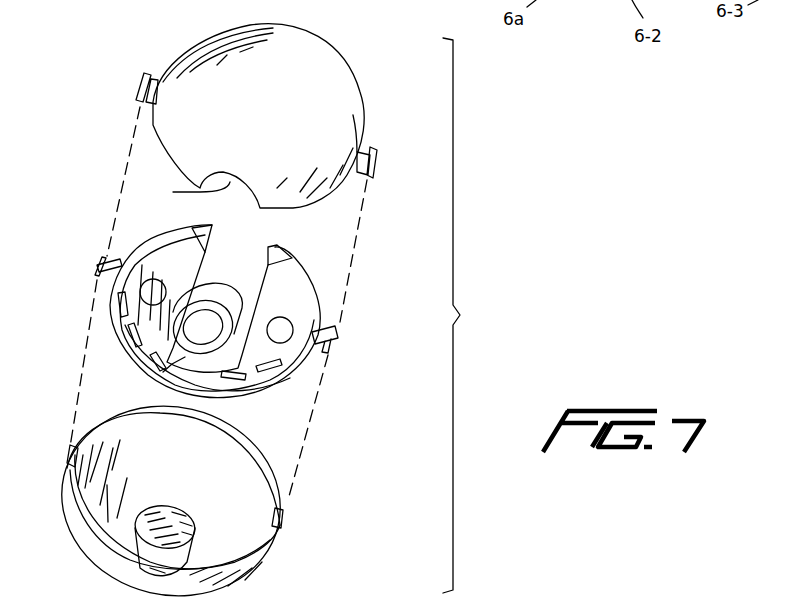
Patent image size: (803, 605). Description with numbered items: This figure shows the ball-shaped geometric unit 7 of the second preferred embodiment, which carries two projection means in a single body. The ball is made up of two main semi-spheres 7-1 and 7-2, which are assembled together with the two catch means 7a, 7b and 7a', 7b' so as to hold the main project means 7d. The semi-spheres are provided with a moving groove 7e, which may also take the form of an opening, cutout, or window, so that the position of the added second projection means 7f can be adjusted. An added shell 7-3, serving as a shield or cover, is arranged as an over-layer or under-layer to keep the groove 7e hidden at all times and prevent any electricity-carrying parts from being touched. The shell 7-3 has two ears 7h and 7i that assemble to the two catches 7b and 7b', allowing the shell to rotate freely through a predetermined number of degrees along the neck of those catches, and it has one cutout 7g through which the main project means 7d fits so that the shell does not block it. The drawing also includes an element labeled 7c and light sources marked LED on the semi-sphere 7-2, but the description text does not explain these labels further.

The light emitting ball assembly 7 is at (462, 315).
The upper dome cover 7-1 is at (322, 97).
The middle body with LEDs 7-2 is at (292, 290).
The lower bowl housing 7-3 is at (245, 462).
The hinge tab 7a is at (108, 59).
The hinge tab 7a' is at (389, 122).
The clip 7b is at (96, 222).
The clip 7b' is at (367, 312).
The tongue of dome cover 7c is at (180, 192).
The cylindrical holder 7d is at (213, 280).
The support rib 7e is at (172, 362).
The battery cylinder 7f is at (152, 523).
The cylinder base 7g is at (152, 568).
The slot tab 7h is at (72, 447).
The slot tab 7i is at (283, 522).
The light emitting diode LED is at (216, 311).